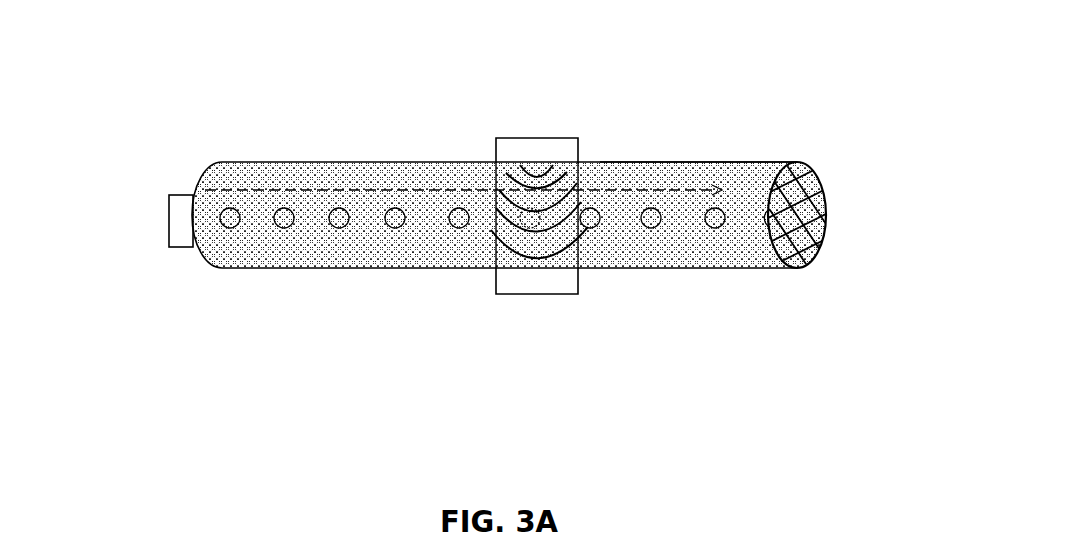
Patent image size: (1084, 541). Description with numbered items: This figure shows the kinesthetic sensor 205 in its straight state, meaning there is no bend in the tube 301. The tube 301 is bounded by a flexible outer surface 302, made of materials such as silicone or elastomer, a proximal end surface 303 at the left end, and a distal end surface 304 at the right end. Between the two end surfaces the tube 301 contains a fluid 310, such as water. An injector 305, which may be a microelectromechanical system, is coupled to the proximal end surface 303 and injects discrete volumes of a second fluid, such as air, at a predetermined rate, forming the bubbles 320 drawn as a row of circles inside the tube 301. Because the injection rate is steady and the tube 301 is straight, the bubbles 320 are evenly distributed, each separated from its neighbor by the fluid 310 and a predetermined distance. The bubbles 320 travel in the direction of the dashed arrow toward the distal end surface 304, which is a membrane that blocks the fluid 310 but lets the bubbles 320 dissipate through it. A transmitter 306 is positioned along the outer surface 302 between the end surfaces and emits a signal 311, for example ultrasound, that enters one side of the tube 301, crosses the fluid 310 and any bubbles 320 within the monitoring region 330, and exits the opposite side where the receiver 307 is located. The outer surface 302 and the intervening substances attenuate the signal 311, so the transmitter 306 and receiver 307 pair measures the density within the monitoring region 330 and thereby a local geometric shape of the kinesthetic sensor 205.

The kinesthetic sensor 205 is at (82, 21).
The tube 301 is at (347, 162).
The outer surface 302 is at (696, 161).
The proximal end surface 303 is at (199, 173).
The distal end surface 304 is at (886, 128).
The injector 305 is at (183, 195).
The transmitter 306 is at (540, 138).
The receiver 307 is at (557, 294).
The fluid 310 is at (430, 173).
The signal 311 is at (491, 255).
The bubbles 320 is at (338, 224).
The monitoring region 330 is at (578, 270).